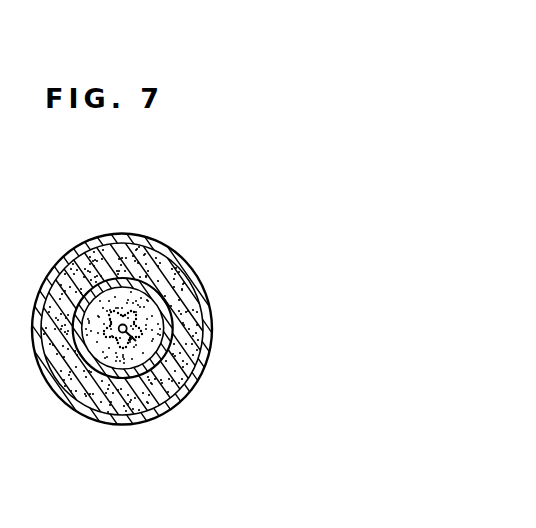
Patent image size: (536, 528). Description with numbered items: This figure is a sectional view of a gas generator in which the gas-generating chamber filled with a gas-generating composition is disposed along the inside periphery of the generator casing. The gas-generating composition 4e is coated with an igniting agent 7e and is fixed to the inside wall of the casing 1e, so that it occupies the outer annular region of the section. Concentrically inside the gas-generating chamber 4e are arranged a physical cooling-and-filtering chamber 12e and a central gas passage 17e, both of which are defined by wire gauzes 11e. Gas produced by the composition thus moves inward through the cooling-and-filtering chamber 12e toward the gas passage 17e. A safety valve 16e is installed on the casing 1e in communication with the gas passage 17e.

The casing 1e is at (143, 232).
The gas-generating composition 4e is at (173, 262).
The igniting agent 7e is at (78, 309).
The wire gauzes 11e is at (55, 265).
The physical cooling-and-filtering chamber 12e is at (96, 370).
The safety valve 16e is at (166, 352).
The gas passage 17e is at (100, 376).